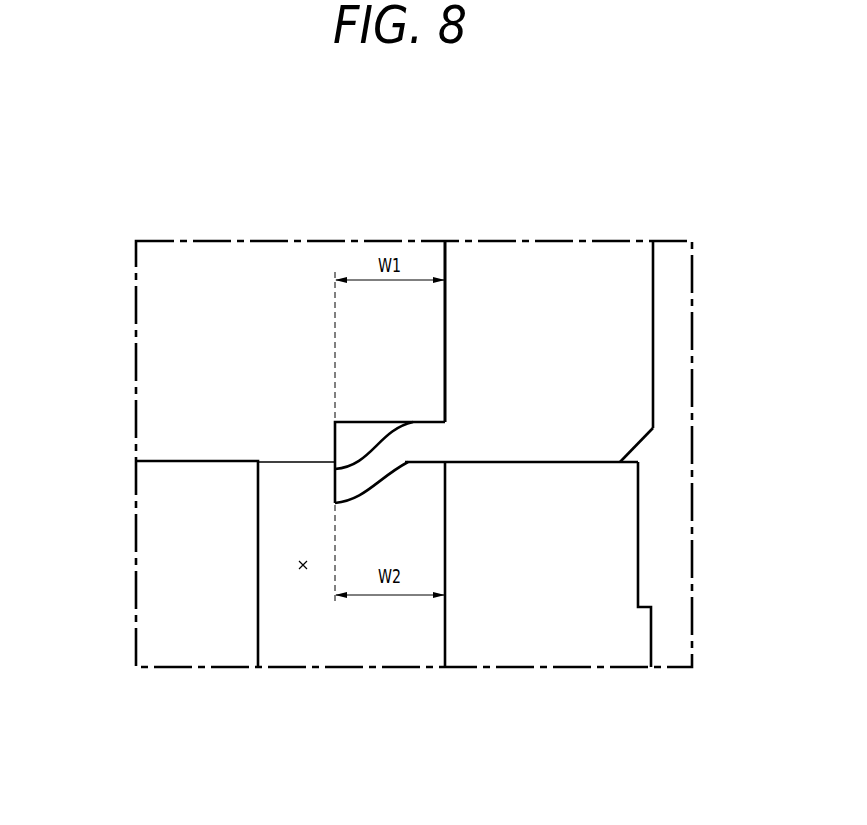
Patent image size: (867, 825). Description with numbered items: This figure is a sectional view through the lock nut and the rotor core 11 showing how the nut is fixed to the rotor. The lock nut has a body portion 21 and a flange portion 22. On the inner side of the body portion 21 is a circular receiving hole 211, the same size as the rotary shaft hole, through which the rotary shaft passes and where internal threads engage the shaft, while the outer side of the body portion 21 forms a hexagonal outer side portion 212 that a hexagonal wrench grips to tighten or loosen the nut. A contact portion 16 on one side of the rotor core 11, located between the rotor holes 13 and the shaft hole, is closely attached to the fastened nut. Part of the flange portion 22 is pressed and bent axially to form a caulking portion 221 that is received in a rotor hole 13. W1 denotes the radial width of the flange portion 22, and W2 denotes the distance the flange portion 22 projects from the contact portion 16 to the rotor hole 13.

The rotor core 11 is at (181, 461).
The rotor hole 13 is at (302, 571).
The contact portion 16 is at (589, 462).
The body portion 21 is at (497, 327).
The receiving hole 211 is at (654, 300).
The hexagonal outer side portion 212 is at (445, 318).
The flange portion 22 is at (343, 417).
The caulking portion 221 is at (368, 458).